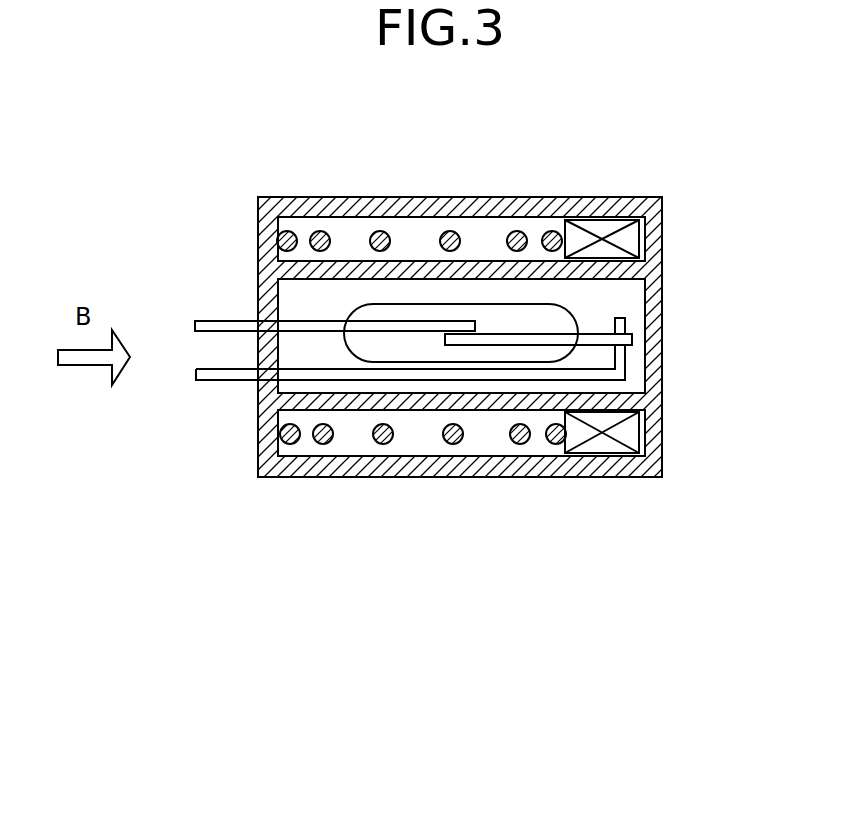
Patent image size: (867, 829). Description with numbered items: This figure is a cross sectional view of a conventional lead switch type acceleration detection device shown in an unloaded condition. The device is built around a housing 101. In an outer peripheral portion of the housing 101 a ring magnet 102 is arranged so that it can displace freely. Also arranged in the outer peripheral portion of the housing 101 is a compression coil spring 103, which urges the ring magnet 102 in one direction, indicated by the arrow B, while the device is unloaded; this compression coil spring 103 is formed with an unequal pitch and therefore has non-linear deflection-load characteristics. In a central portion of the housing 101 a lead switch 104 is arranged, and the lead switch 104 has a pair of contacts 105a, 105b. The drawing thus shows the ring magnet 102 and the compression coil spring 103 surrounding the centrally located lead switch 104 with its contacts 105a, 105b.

The housing 101 is at (653, 322).
The ring magnet 102 is at (634, 227).
The compression coil spring 103 is at (456, 232).
The lead switch 104 is at (372, 312).
The contact of the lead switch 105a is at (428, 332).
The contact of the lead switch 105b is at (477, 346).